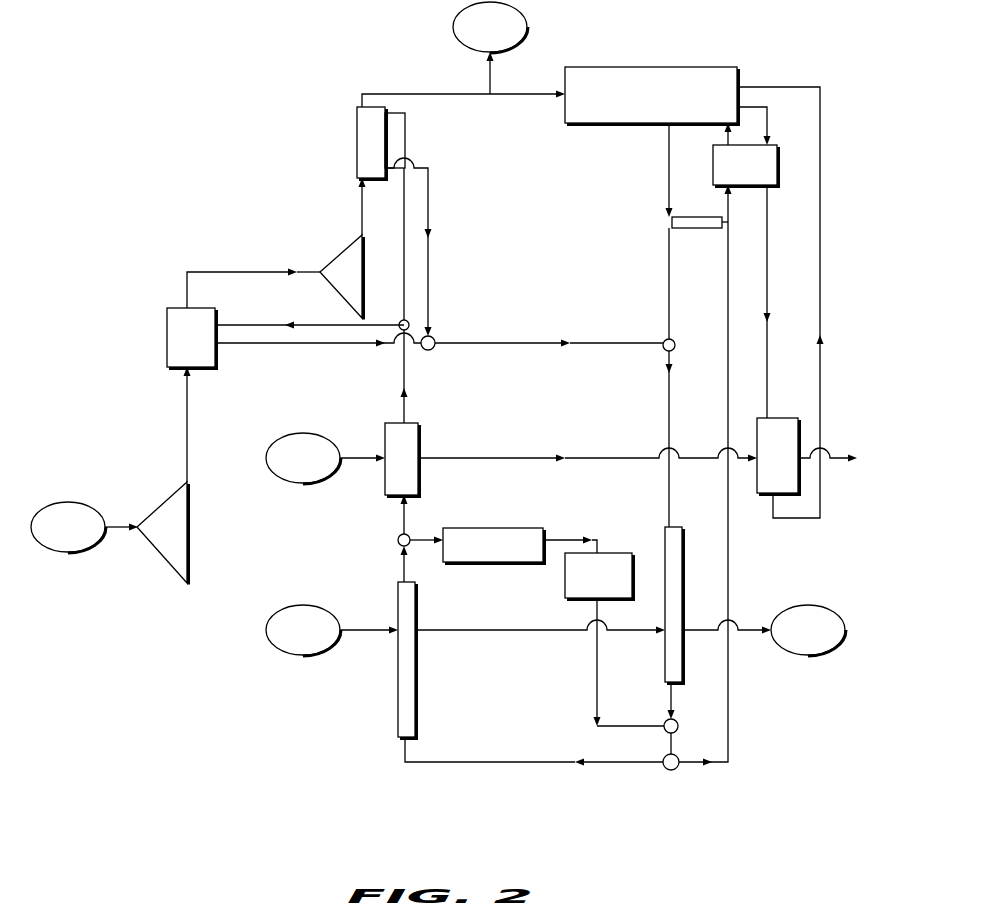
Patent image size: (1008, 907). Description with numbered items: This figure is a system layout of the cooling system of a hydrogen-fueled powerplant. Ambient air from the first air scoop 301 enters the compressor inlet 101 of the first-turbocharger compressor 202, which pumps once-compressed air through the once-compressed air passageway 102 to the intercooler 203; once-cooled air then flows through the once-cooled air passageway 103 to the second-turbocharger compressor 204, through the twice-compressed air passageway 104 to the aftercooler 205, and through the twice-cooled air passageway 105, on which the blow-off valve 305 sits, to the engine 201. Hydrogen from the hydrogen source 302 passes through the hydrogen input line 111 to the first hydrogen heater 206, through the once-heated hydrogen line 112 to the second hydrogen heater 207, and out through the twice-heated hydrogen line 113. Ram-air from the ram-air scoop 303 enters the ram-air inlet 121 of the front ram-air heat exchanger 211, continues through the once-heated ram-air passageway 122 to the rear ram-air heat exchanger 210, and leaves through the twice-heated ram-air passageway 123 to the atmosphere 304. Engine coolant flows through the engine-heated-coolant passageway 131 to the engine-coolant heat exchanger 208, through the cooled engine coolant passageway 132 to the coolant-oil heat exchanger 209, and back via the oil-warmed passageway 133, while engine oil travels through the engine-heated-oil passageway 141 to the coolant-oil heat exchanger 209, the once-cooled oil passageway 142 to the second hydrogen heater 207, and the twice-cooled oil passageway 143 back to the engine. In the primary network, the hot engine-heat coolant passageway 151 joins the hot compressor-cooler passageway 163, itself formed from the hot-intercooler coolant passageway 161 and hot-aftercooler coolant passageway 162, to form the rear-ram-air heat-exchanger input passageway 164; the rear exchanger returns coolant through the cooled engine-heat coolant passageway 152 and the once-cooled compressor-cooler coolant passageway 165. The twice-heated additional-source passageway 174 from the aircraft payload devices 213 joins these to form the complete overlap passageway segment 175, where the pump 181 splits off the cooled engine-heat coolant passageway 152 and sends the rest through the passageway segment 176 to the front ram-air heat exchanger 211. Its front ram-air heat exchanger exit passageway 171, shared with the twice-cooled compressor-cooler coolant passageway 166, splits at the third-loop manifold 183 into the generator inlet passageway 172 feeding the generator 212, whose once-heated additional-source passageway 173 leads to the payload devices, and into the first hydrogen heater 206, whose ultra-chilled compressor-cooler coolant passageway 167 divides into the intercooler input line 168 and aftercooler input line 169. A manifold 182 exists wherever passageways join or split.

The compressor inlet 101 is at (126, 521).
The once-compressed air passageway 102 is at (185, 430).
The once-cooled air passageway 103 is at (238, 270).
The twice-compressed air passageway 104 is at (362, 206).
The twice-cooled air passageway 105 is at (418, 91).
The hydrogen input line 111 is at (360, 456).
The once-heated hydrogen line 112 is at (498, 456).
The twice-heated hydrogen line 113 is at (840, 463).
The ram-air inlet 121 is at (369, 623).
The once-heated ram-air passageway 122 is at (496, 623).
The twice-heated ram-air passageway 123 is at (755, 634).
The engine-heated-coolant passageway 131 is at (668, 190).
The cooled engine coolant passageway 132 is at (732, 200).
The oil-warmed passageway 133 is at (727, 135).
The engine-heated-oil passageway 141 is at (757, 104).
The once-cooled oil passageway 142 is at (769, 277).
The twice-cooled oil passageway 143 is at (822, 205).
The hot engine-heat coolant passageway 151 is at (668, 296).
The cooled engine-heat coolant passageway 152 is at (730, 706).
The hot-intercooler coolant passageway 161 is at (242, 348).
The hot-aftercooler coolant passageway 162 is at (430, 203).
The hot compressor-cooler passageway 163 is at (501, 341).
The rear-ram-air heat-exchanger input passageway 164 is at (667, 404).
The once-cooled compressor-cooler coolant passageway 165 is at (670, 710).
The twice-cooled compressor-cooler coolant passageway 166 is at (399, 512).
The ultra-chilled compressor-cooler coolant passageway 167 is at (406, 368).
The intercooler input line 168 is at (254, 323).
The aftercooler input line 169 is at (407, 135).
The front ram-air heat exchanger exit passageway 171 is at (399, 560).
The generator inlet passageway 172 is at (437, 535).
The once-heated additional-source passageway 173 is at (578, 537).
The twice-heated additional-source passageway 174 is at (595, 670).
The complete overlap passageway segment 175 is at (671, 745).
The passageway segment 176 is at (501, 774).
The pump 181 is at (673, 770).
The manifold 182 is at (407, 320).
The third-loop manifold 183 is at (398, 538).
The engine 201 is at (664, 95).
The first-turbocharger compressor 202 is at (157, 553).
The intercooler 203 is at (170, 340).
The second-turbocharger compressor 204 is at (345, 250).
The aftercooler 205 is at (368, 140).
The first hydrogen heater 206 is at (393, 421).
The second hydrogen heater 207 is at (780, 433).
The engine-coolant heat exchanger 208 is at (699, 225).
The coolant-oil heat exchanger 209 is at (780, 168).
The rear ram-air heat exchanger 210 is at (682, 564).
The front ram-air heat exchanger 211 is at (397, 707).
The generator 212 is at (506, 555).
The aircraft payload devices 213 is at (611, 586).
The first air scoop 301 is at (81, 538).
The hydrogen source 302 is at (316, 469).
The ram-air scoop 303 is at (316, 641).
The atmosphere 304 is at (821, 641).
The blow-off valve 305 is at (503, 38).